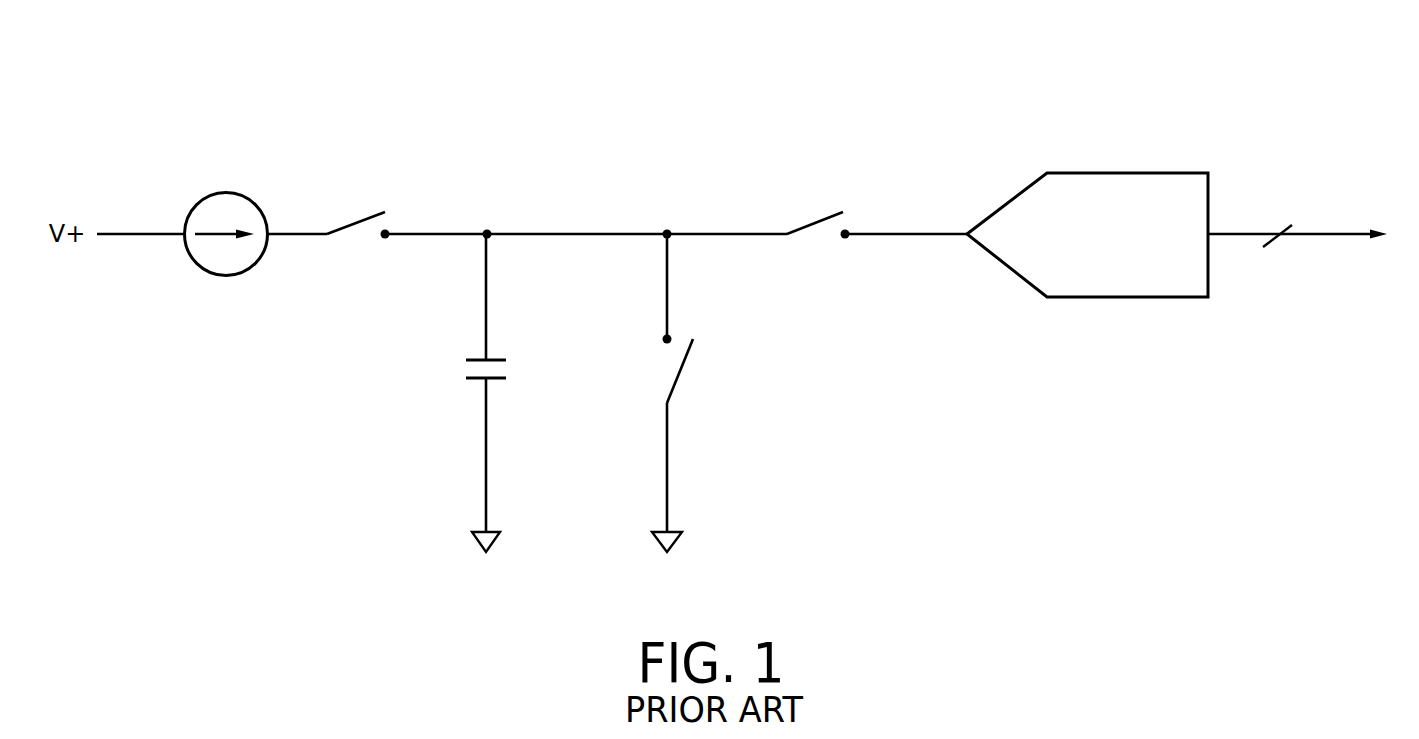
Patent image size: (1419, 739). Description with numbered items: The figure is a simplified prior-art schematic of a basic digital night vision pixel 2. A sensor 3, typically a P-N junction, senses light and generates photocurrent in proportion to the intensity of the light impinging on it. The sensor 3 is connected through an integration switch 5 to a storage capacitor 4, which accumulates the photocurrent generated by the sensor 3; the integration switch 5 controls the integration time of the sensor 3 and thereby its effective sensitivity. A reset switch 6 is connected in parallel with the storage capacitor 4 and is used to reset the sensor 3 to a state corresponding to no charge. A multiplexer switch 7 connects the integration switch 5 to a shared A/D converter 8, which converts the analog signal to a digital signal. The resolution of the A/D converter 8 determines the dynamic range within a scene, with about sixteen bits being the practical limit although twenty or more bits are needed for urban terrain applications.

The digital night vision pixel 2 is at (776, 72).
The sensor 3 is at (225, 276).
The storage capacitor 4 is at (510, 369).
The integration switch 5 is at (360, 237).
The reset switch 6 is at (668, 367).
The multiplexer (Mux) switch 7 is at (820, 237).
The A/D converter 8 is at (1110, 297).